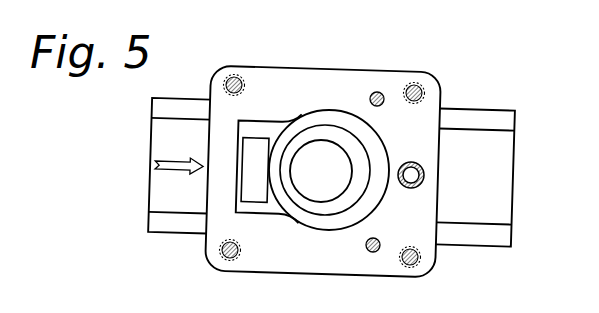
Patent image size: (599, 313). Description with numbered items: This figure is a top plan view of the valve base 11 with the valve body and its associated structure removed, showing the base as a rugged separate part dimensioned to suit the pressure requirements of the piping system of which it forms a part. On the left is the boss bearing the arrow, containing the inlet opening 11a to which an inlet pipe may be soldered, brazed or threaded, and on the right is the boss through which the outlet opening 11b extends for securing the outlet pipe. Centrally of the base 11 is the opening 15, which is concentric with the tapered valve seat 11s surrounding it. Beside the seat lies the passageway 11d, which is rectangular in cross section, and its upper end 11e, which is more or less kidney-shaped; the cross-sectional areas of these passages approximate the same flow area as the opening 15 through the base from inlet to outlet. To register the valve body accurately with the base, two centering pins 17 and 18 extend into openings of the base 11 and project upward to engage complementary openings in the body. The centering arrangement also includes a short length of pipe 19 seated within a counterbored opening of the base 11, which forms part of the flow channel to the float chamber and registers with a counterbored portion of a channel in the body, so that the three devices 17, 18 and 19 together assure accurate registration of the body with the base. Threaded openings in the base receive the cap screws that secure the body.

The base 11 is at (335, 69).
The inlet opening 11a is at (150, 198).
The outlet opening 11b is at (513, 163).
The passageway 11d is at (244, 188).
The upper end of passageway 11e is at (262, 127).
The tapered valve seat 11s is at (353, 148).
The opening 15 is at (298, 191).
The centering pin 17 is at (366, 250).
The centering pin 18 is at (378, 92).
The short length of pipe 19 is at (402, 188).